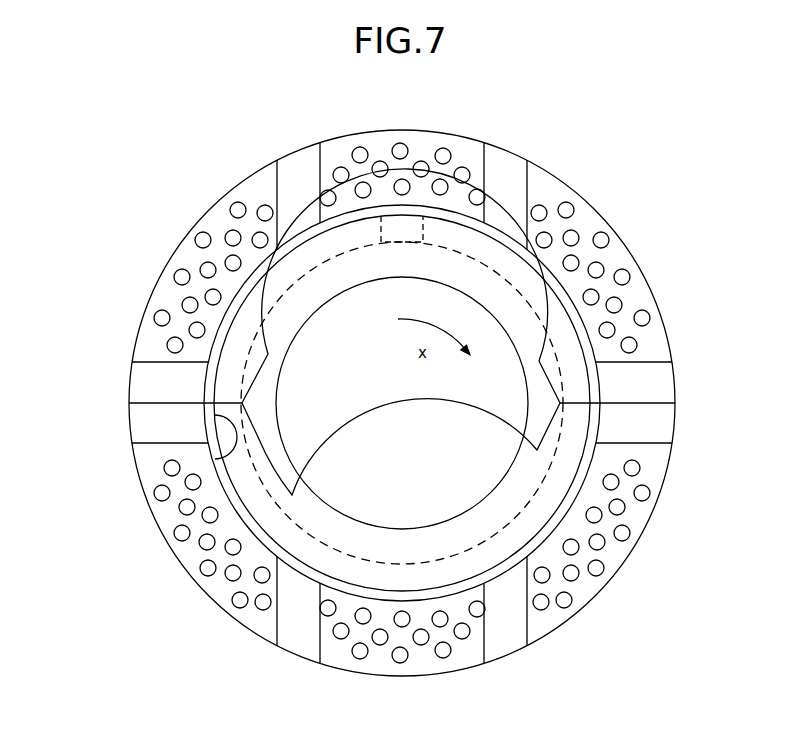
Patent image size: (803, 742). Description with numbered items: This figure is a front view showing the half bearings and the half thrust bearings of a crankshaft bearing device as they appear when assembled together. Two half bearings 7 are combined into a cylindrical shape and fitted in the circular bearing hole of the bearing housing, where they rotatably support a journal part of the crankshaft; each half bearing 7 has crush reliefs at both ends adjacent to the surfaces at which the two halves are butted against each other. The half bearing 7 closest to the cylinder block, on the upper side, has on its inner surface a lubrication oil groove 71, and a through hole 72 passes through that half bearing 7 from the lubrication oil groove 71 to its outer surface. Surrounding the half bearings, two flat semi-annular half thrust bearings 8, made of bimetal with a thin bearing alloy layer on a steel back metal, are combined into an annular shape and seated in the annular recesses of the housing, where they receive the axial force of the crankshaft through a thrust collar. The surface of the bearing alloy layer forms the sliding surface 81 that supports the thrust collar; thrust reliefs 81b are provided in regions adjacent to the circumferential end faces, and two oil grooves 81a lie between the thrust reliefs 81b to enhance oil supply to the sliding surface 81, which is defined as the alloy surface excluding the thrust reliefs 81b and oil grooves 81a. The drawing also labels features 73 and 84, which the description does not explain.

The half bearing 7 is at (263, 293).
The half thrust bearing 8 is at (578, 210).
The lubrication oil groove 71 is at (253, 327).
The through hole 72 is at (410, 214).
The projection 73 is at (233, 450).
The sliding surface 81 is at (612, 257).
The oil grooves 81a is at (295, 167).
The thrust reliefs 81b is at (153, 389).
The through holes 84 is at (240, 205).